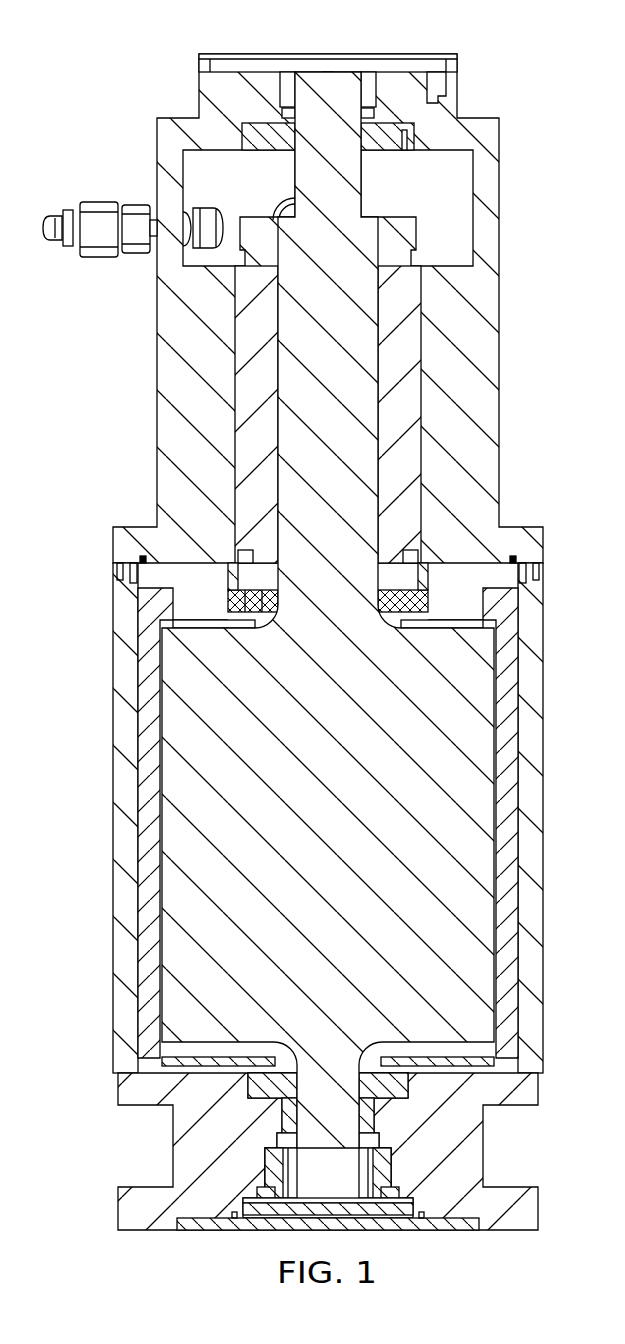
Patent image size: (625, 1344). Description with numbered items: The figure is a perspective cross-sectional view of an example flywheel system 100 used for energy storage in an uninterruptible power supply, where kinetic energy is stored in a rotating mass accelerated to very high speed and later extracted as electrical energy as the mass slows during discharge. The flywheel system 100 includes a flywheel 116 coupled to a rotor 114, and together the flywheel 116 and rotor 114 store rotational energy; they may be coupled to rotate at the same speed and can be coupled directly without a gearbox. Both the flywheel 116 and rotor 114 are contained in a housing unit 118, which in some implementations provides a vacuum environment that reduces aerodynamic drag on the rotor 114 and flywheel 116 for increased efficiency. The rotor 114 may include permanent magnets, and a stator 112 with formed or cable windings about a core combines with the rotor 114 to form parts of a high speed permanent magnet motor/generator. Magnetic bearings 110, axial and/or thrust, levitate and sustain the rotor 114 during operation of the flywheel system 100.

The flywheel system 100 is at (56, 64).
The magnetic bearings 110 is at (447, 197).
The stator 112 is at (250, 395).
The rotor 114 is at (350, 435).
The flywheel 116 is at (350, 850).
The housing unit 118 is at (484, 297).